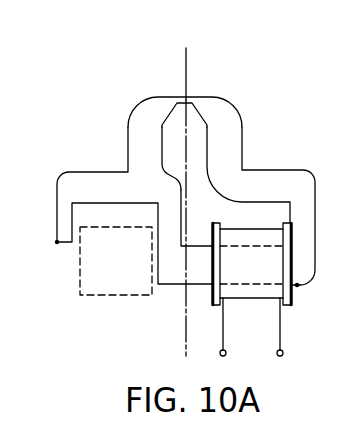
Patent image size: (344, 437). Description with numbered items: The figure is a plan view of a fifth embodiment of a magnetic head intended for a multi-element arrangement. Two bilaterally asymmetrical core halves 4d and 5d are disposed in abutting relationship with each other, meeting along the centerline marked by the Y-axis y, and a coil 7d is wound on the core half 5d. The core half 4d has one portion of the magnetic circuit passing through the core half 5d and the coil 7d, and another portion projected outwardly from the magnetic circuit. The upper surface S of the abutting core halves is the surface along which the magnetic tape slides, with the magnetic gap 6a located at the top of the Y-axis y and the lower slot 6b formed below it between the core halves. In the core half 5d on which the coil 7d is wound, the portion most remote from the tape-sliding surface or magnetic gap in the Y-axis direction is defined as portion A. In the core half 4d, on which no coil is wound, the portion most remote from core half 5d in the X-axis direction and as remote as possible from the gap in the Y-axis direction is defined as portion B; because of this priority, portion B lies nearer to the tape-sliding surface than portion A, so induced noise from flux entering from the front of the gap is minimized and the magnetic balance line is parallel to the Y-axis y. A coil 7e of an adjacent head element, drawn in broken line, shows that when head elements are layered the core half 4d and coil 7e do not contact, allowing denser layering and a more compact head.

The core half 4d is at (137, 147).
The core half 5d is at (234, 147).
The upper slot / gap of yoke 6a is at (187, 97).
The lower slot of yoke 6b is at (184, 285).
The coil 7d is at (253, 298).
The coil of an adjacent head element 7e is at (108, 291).
The yoke top surface S is at (158, 97).
The portion A is at (298, 287).
The portion B is at (57, 243).
The Y-axis y is at (186, 189).